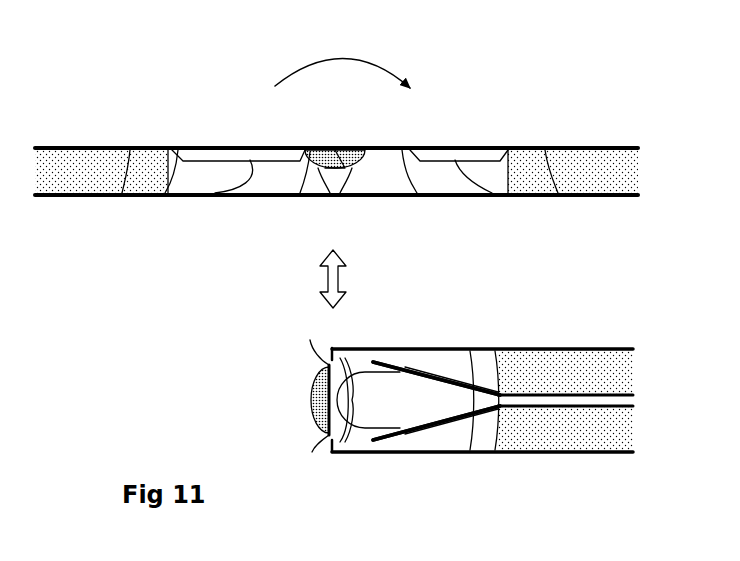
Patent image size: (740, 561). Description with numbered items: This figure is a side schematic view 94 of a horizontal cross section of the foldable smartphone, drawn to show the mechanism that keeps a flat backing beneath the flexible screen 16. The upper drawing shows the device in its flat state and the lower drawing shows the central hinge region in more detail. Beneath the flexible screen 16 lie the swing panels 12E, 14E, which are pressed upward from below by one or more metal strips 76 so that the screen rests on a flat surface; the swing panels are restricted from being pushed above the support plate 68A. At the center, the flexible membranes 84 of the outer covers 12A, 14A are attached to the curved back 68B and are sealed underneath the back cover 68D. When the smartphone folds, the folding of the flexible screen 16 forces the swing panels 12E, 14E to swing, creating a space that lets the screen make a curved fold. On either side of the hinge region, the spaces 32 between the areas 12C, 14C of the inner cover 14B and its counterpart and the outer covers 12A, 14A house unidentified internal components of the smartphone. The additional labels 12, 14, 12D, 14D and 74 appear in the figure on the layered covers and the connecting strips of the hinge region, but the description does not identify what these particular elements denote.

The side schematic view 94 is at (248, 92).
The first sheet 12 is at (48, 198).
The second sheet 14 is at (630, 198).
The outer cover 12A is at (93, 198).
The outer cover 14A is at (595, 454).
The spaces 32 is at (95, 146).
The inner cover 14B is at (595, 198).
The flexible screen 16 is at (195, 146).
The area of inner cover 12C is at (125, 198).
The area of inner cover 14C is at (557, 198).
The first sheet layer 12D is at (165, 198).
The swing panel 12E is at (217, 198).
The swing panel 14E is at (432, 198).
The second sheet layer 14D is at (495, 146).
The connecting strips 74 is at (372, 348).
The metal strips 76 is at (497, 198).
The back cover 68D is at (327, 198).
The curved back 68B is at (293, 198).
The flexible membranes 84 is at (350, 198).
The support plate 68A is at (358, 454).